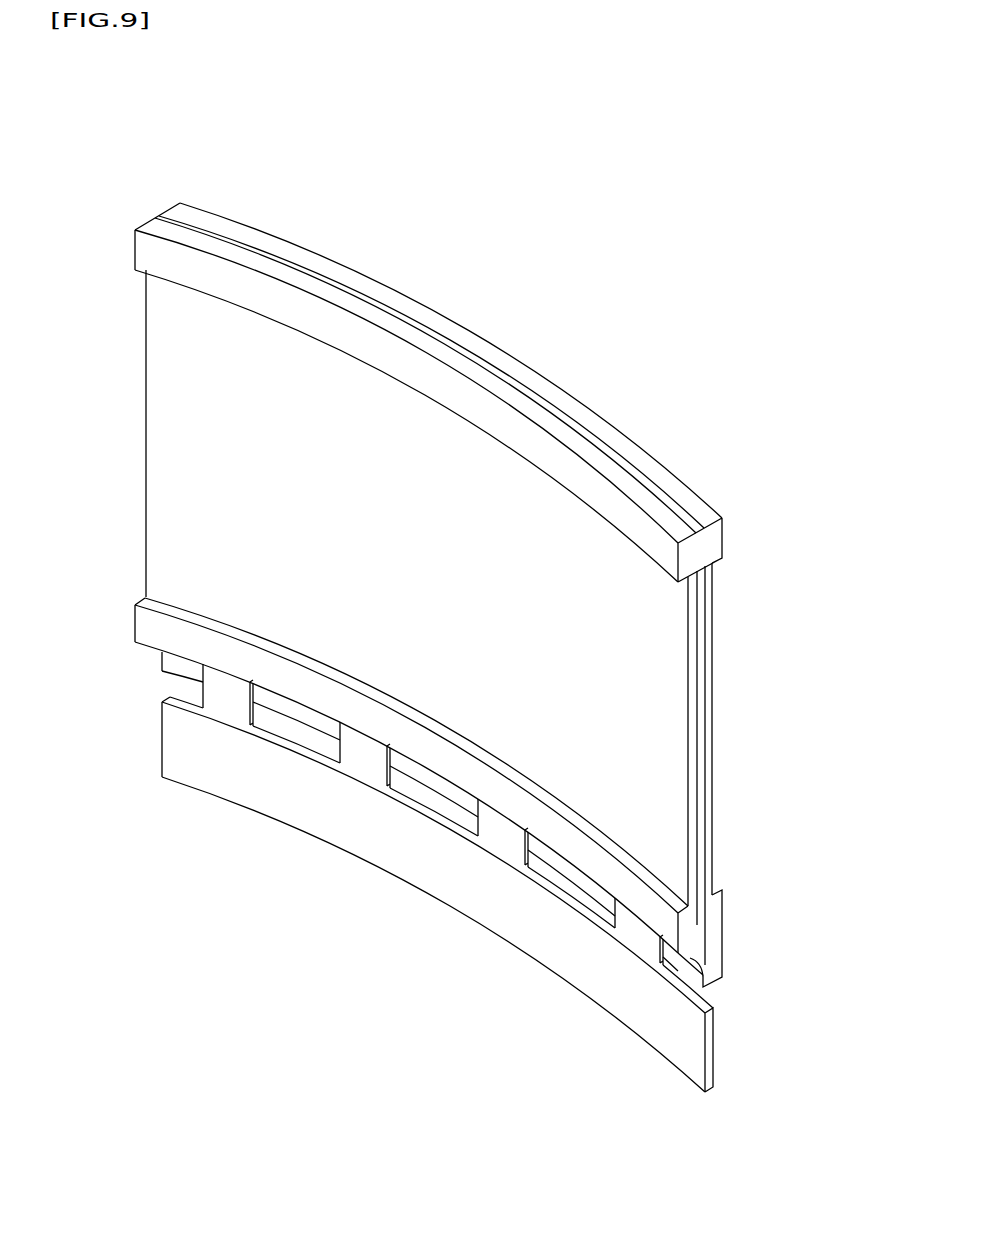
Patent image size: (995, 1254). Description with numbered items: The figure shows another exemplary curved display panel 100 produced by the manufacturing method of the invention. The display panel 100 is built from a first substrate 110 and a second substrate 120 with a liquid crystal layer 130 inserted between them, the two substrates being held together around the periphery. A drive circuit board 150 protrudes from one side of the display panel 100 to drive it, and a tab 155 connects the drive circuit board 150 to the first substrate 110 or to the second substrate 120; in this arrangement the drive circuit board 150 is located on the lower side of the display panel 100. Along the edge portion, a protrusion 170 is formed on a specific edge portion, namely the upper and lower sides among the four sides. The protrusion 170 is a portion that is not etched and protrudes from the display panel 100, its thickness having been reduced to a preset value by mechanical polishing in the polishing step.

The display panel 100 is at (258, 168).
The first substrate 110 is at (373, 418).
The second substrate 120 is at (712, 605).
The liquid crystal layer 130 is at (705, 725).
The drive circuit board 150 is at (428, 857).
The tab 155 is at (373, 750).
The protrusion 170 is at (152, 253).